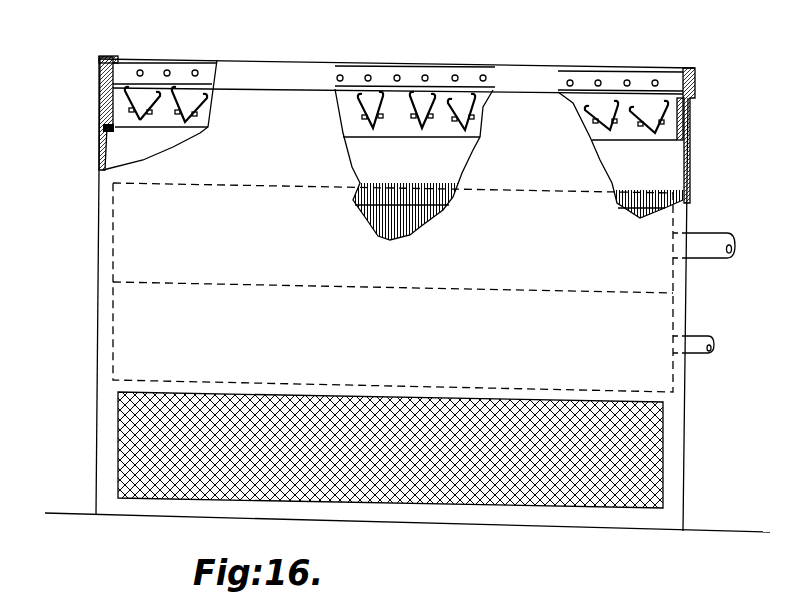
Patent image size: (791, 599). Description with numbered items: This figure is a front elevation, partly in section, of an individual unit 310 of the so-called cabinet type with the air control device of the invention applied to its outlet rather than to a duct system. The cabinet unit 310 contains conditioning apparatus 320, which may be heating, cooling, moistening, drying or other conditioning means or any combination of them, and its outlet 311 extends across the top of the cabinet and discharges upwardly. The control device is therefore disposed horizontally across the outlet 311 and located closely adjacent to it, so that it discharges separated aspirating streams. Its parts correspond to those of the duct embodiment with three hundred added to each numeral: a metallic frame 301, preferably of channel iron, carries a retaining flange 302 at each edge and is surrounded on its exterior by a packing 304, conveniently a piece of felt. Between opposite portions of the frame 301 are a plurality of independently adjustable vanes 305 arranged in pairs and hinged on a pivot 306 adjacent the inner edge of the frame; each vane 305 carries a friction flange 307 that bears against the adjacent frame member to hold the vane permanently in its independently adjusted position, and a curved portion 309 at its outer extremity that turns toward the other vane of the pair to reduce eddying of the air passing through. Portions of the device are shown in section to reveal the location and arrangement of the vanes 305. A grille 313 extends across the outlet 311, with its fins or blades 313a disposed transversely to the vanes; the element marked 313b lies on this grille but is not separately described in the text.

The metallic frame 301 is at (400, 129).
The retaining flange 302 is at (104, 135).
The packing 304 is at (112, 89).
The vane 305 is at (123, 92).
The pivot 306 is at (140, 121).
The friction flange 307 is at (183, 124).
The curved portion 309 is at (124, 87).
The unit 310 is at (677, 408).
The outlet 311 is at (118, 61).
The grille 313 is at (690, 70).
The fins or blades 313a is at (642, 82).
The rivet 313b is at (627, 80).
The conditioning apparatus 320 is at (684, 201).